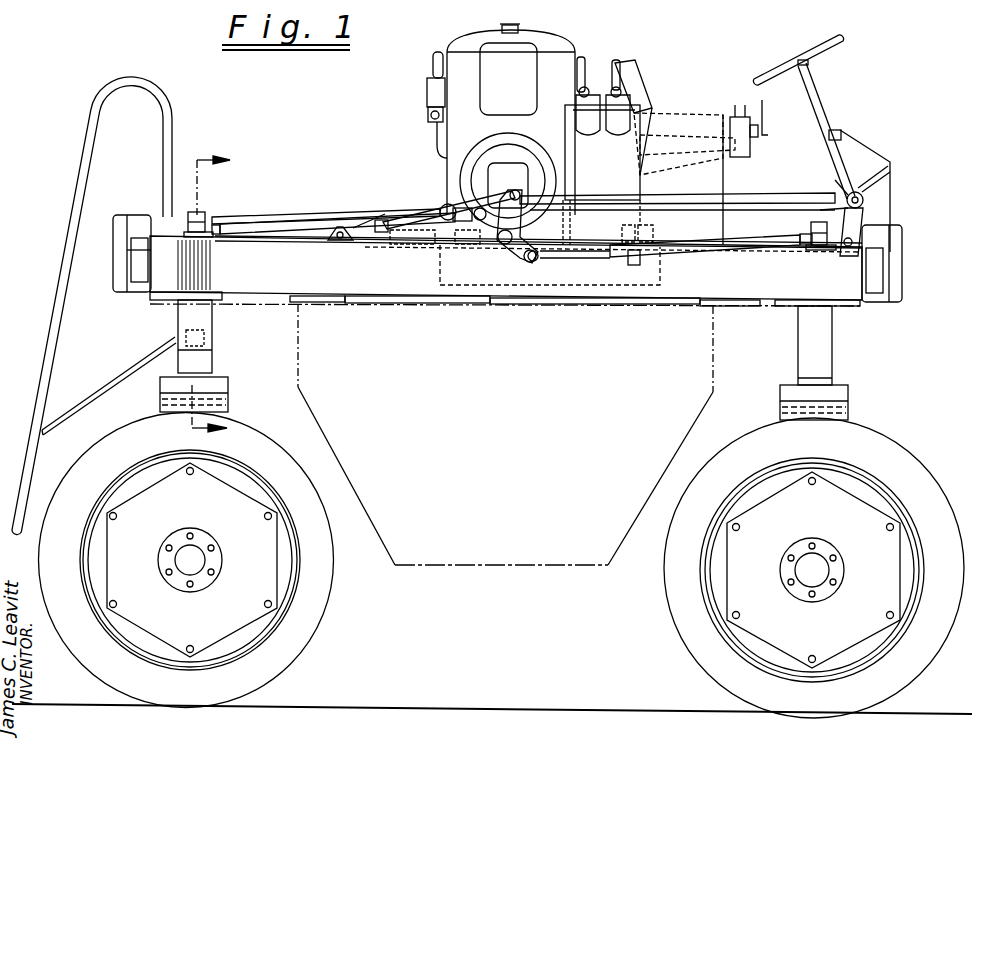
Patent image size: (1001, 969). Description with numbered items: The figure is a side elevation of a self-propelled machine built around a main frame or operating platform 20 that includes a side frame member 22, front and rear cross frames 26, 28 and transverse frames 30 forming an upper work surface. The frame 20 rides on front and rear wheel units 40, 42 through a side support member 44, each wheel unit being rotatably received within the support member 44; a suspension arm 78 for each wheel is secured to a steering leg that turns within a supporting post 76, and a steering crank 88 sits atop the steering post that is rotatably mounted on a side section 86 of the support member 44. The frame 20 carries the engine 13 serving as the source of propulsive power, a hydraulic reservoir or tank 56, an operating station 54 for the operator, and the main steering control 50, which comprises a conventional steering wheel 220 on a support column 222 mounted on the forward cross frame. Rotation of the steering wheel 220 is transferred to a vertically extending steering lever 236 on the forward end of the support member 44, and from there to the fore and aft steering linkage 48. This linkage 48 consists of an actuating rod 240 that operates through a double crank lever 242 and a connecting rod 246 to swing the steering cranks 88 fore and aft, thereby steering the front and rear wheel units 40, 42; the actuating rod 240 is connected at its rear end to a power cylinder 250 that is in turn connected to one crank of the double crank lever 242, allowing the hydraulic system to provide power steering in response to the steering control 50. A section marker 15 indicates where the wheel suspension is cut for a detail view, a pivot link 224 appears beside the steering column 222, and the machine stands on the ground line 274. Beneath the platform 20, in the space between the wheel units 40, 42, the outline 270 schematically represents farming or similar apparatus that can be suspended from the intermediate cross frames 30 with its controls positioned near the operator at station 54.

The engine 13 is at (577, 33).
The operating station 54 is at (674, 95).
The steering wheel 220 is at (818, 40).
The support column 222 is at (820, 95).
The main steering control 50 is at (884, 103).
The rear cross frame 28 is at (112, 232).
The steering crank 88 is at (188, 220).
The side frame member 22 is at (218, 221).
The main frame 20 is at (307, 208).
The connecting rod 246 is at (322, 215).
The steering linkage 48 is at (402, 207).
The power cylinder 250 is at (430, 205).
The actuating rod 240 is at (590, 197).
The support link 224 is at (884, 196).
The steering lever 236 is at (868, 220).
The front cross frame 26 is at (903, 258).
The reservoir 56 is at (568, 137).
The double crank lever 242 is at (515, 260).
The supporting post 76 is at (200, 318).
The transverse frame 30 is at (299, 304).
The side section 86 is at (398, 297).
The side support member 44 is at (640, 290).
The suspension arm 78 is at (228, 402).
The section line 15 is at (226, 296).
The front wheel unit 40 is at (918, 452).
The rear wheel unit 42 is at (338, 603).
The suspended apparatus 270 is at (515, 570).
The ground 274 is at (492, 692).